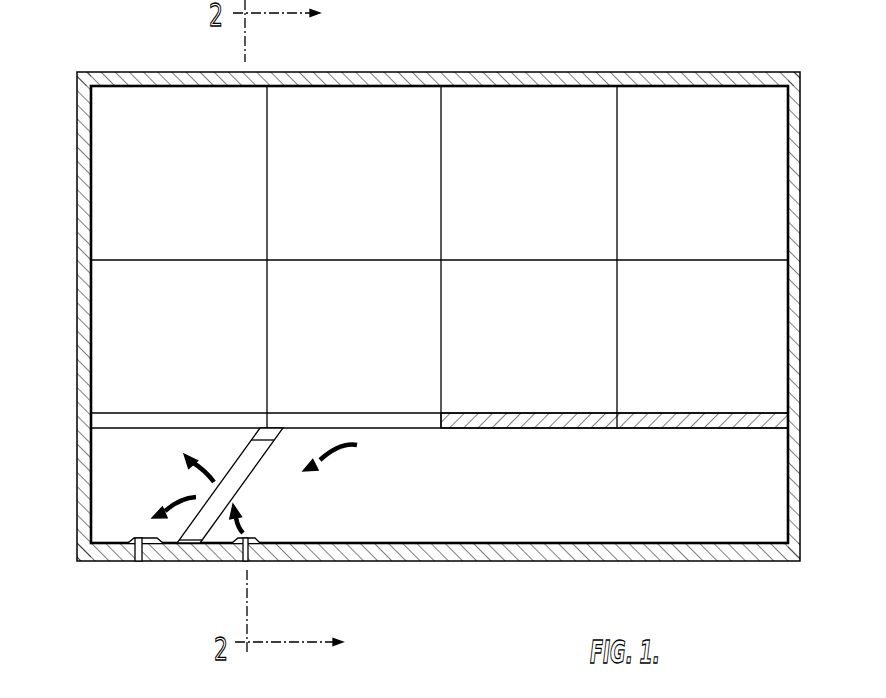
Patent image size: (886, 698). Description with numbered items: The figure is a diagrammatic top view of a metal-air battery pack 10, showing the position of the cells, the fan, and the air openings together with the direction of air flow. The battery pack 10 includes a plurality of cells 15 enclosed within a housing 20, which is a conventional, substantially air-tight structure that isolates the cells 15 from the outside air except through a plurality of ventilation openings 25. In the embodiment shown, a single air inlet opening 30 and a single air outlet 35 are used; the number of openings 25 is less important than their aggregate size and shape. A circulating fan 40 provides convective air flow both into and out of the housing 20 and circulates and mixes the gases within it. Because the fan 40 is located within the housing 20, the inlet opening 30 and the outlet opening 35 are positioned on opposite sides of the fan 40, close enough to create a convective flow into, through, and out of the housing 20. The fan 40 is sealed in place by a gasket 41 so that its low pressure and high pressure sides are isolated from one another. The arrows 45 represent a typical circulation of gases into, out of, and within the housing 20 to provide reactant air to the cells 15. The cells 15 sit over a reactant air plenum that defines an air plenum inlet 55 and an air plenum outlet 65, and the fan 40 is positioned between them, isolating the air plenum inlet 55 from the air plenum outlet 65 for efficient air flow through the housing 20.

The metal-air battery pack 10 is at (62, 80).
The cells 15 is at (173, 186).
The housing 20 is at (70, 275).
The ventilation openings 25 is at (140, 585).
The air inlet opening 30 is at (257, 539).
The air outlet 35 is at (138, 538).
The circulating fan 40 is at (250, 476).
The gasket 41 is at (280, 430).
The arrows 45 is at (207, 480).
The air plenum inlet 55 is at (170, 428).
The air plenum outlet 65 is at (406, 428).